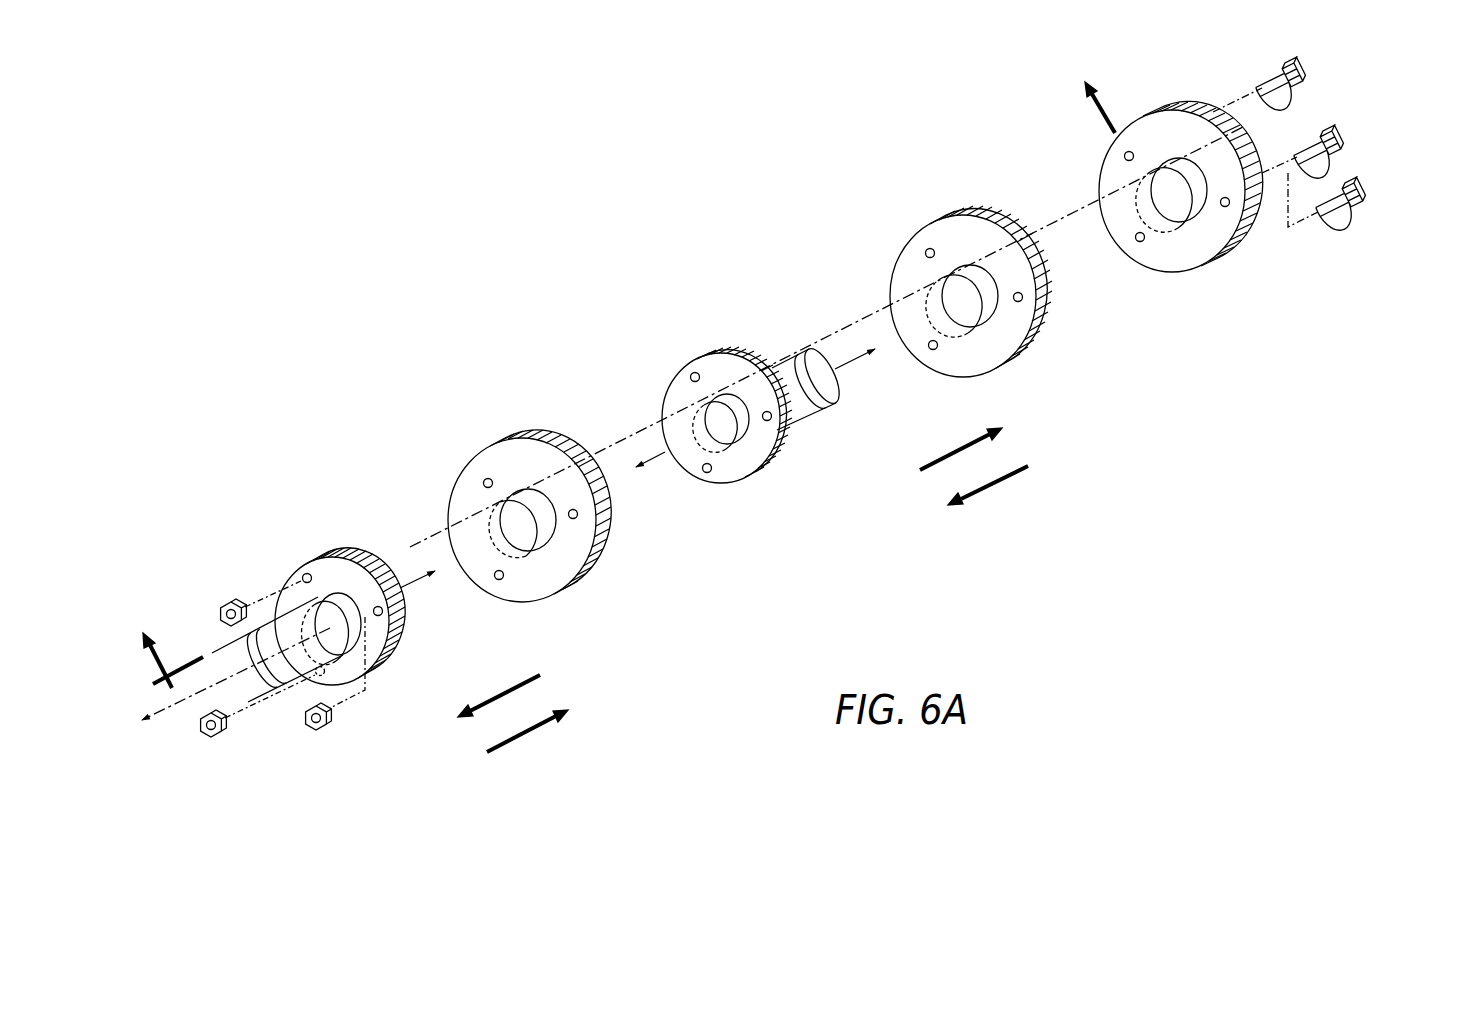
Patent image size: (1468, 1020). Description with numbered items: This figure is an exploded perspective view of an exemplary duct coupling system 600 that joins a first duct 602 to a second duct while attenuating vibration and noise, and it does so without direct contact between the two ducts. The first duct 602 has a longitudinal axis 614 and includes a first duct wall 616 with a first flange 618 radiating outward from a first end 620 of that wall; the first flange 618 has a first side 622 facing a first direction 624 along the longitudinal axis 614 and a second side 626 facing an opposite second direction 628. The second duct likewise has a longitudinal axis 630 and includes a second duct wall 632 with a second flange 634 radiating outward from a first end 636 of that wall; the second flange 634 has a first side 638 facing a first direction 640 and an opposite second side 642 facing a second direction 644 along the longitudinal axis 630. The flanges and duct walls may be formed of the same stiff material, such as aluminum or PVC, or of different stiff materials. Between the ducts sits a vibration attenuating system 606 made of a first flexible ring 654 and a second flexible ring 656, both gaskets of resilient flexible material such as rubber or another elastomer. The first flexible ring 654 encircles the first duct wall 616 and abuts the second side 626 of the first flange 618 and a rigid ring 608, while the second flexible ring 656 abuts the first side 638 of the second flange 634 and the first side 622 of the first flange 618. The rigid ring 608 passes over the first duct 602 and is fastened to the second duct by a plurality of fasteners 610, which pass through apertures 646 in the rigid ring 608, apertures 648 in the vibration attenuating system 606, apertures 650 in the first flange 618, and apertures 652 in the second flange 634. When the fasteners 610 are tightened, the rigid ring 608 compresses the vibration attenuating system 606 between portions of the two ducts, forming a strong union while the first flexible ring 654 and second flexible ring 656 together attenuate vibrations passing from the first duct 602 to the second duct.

The duct coupling system 600 is at (400, 259).
The first duct 602 is at (791, 552).
The vibration attenuating system 606 is at (539, 391).
The rigid ring 608 is at (1186, 100).
The fasteners 610 is at (220, 611).
The longitudinal axis 614 is at (668, 456).
The first duct wall 616 is at (815, 412).
The first flange 618 is at (745, 485).
The first end 620 is at (774, 344).
The first side 622 is at (655, 377).
The first direction 624 is at (1000, 480).
The second side 626 is at (731, 335).
The second direction 628 is at (945, 478).
The longitudinal axis 630 is at (230, 703).
The second duct wall 632 is at (280, 690).
The second flange 634 is at (400, 598).
The first end 636 is at (250, 594).
The first side 638 is at (371, 546).
The first direction 640 is at (512, 745).
The second side 642 is at (270, 573).
The second direction 644 is at (525, 683).
The apertures 646 is at (1125, 154).
The apertures 648 is at (485, 479).
The apertures 650 is at (690, 378).
The apertures 652 is at (307, 573).
The first flexible ring 654 is at (921, 362).
The second flexible ring 656 is at (597, 573).